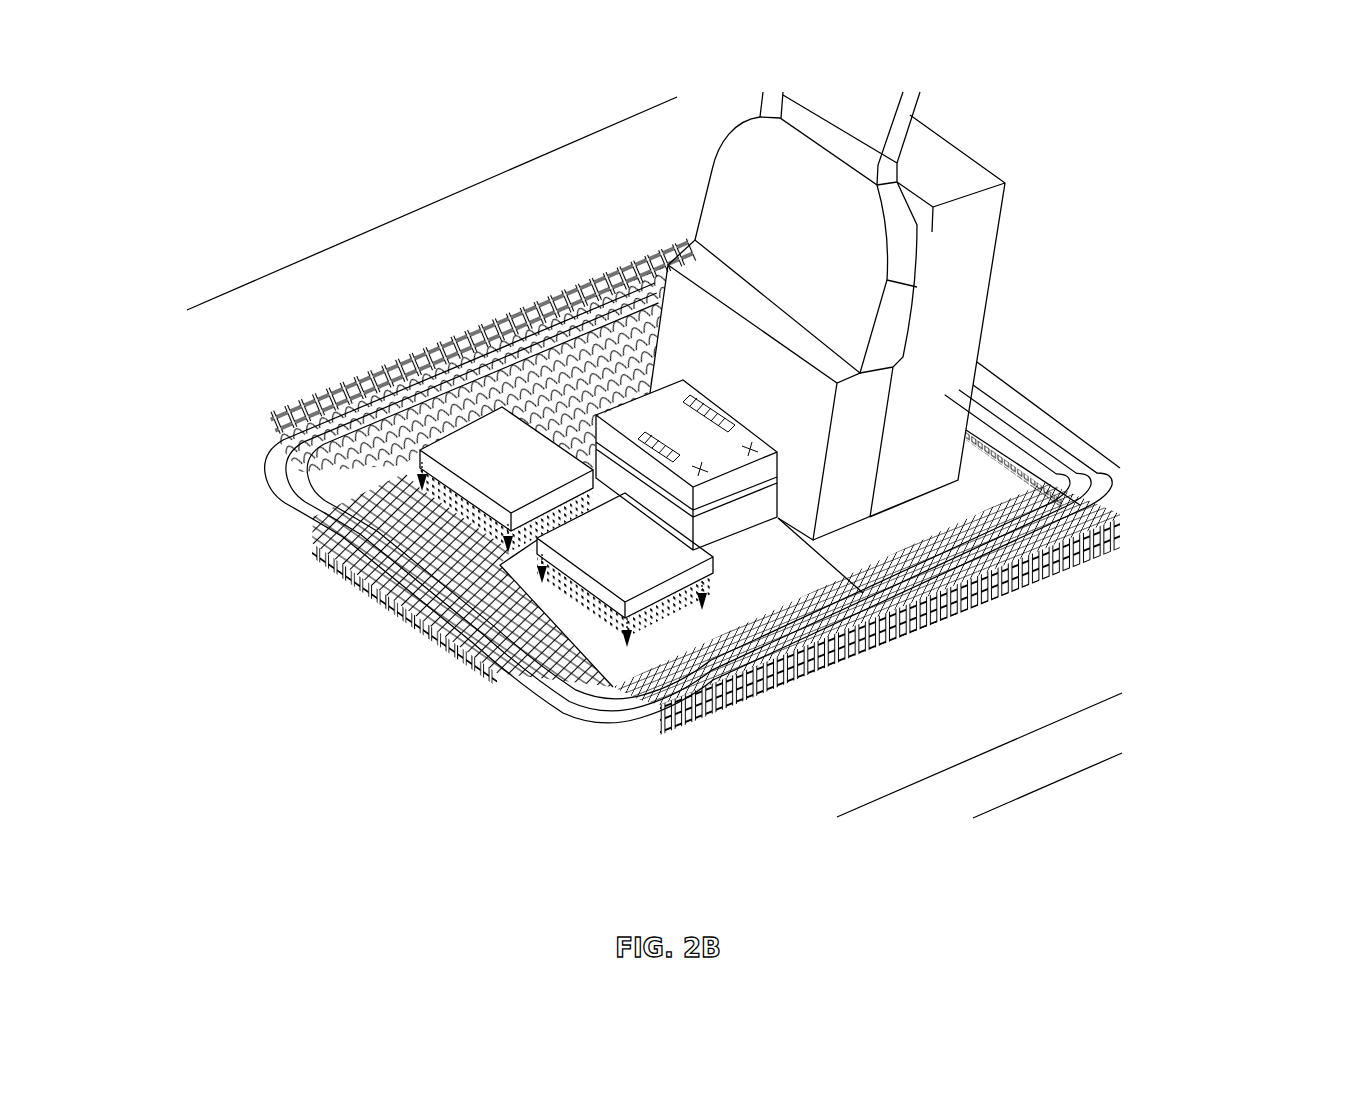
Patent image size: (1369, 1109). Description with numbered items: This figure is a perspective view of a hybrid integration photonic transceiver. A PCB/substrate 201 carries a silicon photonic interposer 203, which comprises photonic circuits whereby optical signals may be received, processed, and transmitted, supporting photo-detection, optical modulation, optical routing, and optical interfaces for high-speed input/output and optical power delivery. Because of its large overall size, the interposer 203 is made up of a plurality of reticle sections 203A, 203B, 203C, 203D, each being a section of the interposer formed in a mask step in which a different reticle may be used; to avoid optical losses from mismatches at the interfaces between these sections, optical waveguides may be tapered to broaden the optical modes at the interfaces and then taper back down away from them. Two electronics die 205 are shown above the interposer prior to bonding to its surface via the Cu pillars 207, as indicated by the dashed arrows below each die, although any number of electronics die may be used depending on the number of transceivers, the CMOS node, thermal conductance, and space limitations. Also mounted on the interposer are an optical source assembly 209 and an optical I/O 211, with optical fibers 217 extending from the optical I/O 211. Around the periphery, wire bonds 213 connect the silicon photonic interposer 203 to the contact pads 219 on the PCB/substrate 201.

The PCB/substrate 201 is at (217, 670).
The silicon photonic interposer 203 is at (1009, 426).
The reticle section 203A is at (724, 584).
The reticle section 203B is at (911, 514).
The reticle section 203C is at (392, 460).
The reticle section 203D is at (630, 364).
The electronics die 205 is at (487, 472).
The Cu pillars 207 is at (586, 631).
The optical source assembly 209 is at (669, 442).
The optical I/O 211 is at (911, 407).
The wire bonds 213 is at (386, 553).
The optical fibers 217 is at (841, 127).
The contact pads 219 is at (400, 635).